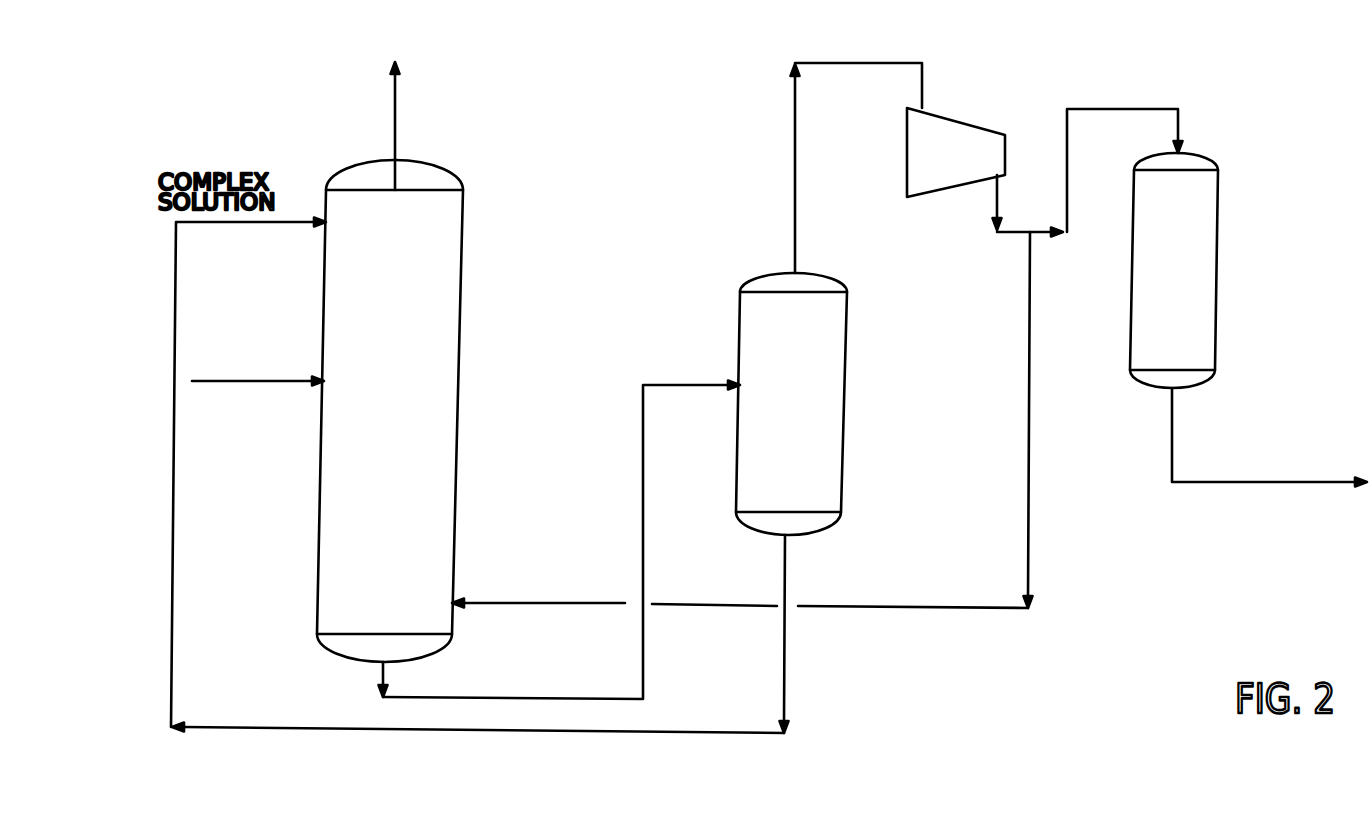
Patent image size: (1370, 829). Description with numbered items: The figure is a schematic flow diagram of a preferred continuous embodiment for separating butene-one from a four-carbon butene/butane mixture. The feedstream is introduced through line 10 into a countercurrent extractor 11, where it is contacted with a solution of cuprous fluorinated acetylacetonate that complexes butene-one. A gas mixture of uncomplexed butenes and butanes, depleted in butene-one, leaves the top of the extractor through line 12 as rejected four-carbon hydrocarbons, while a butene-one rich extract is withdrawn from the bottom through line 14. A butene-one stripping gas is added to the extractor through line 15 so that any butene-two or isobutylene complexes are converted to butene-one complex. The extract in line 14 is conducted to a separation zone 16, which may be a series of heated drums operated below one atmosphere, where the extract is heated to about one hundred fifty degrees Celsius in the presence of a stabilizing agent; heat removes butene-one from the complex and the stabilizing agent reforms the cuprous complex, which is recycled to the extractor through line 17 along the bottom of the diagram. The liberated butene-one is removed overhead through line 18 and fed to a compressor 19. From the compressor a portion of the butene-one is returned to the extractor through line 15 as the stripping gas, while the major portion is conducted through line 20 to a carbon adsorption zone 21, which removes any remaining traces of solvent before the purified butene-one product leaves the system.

The feed line 10 is at (258, 370).
The countercurrent extractor 11 is at (436, 319).
The overhead withdrawal line 12 is at (431, 112).
The extract line 14 is at (560, 540).
The stripping gas line 15 is at (742, 431).
The separation zone 16 is at (829, 392).
The recycle line 17 is at (497, 634).
The butene-1 removal line 18 is at (796, 168).
The compressor 19 is at (944, 178).
The product line 20 is at (1090, 155).
The carbon adsorption zone 21 is at (1208, 238).